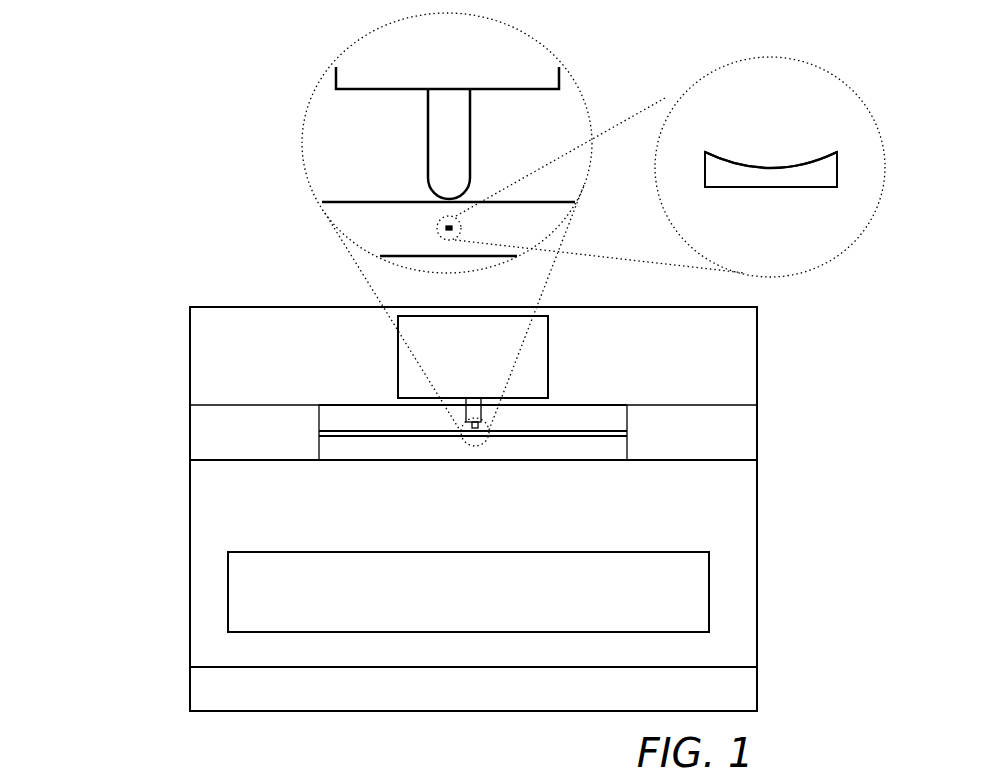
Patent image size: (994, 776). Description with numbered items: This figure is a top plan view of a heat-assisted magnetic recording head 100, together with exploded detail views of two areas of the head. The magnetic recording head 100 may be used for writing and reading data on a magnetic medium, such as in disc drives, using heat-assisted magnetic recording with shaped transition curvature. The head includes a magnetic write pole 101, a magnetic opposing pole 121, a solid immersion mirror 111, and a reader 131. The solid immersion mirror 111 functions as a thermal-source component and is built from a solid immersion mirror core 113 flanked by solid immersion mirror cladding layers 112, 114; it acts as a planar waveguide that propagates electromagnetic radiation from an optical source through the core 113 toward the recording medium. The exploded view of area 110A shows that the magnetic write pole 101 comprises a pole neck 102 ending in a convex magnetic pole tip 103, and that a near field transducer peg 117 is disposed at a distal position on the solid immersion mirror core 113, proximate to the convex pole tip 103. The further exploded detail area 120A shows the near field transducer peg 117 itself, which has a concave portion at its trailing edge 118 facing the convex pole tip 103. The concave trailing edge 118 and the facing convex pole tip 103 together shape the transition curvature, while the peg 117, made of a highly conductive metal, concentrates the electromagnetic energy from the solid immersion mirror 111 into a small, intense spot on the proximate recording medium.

The heat-assisted magnetic recording head 100 is at (116, 100).
The magnetic write pole 101 is at (551, 362).
The pole neck 102 is at (336, 80).
The convex magnetic pole tip 103 is at (428, 190).
The area 110A is at (277, 97).
The solid immersion mirror 111 is at (280, 403).
The solid immersion mirror cladding layer 112 is at (573, 462).
The solid immersion mirror core 113 is at (362, 200).
The solid immersion mirror cladding layer 114 is at (372, 403).
The near field transducer peg 117 is at (460, 228).
The trailing edge 118 is at (803, 160).
The detail area 120A is at (440, 232).
The magnetic opposing pole 121 is at (265, 552).
The reader 131 is at (205, 668).